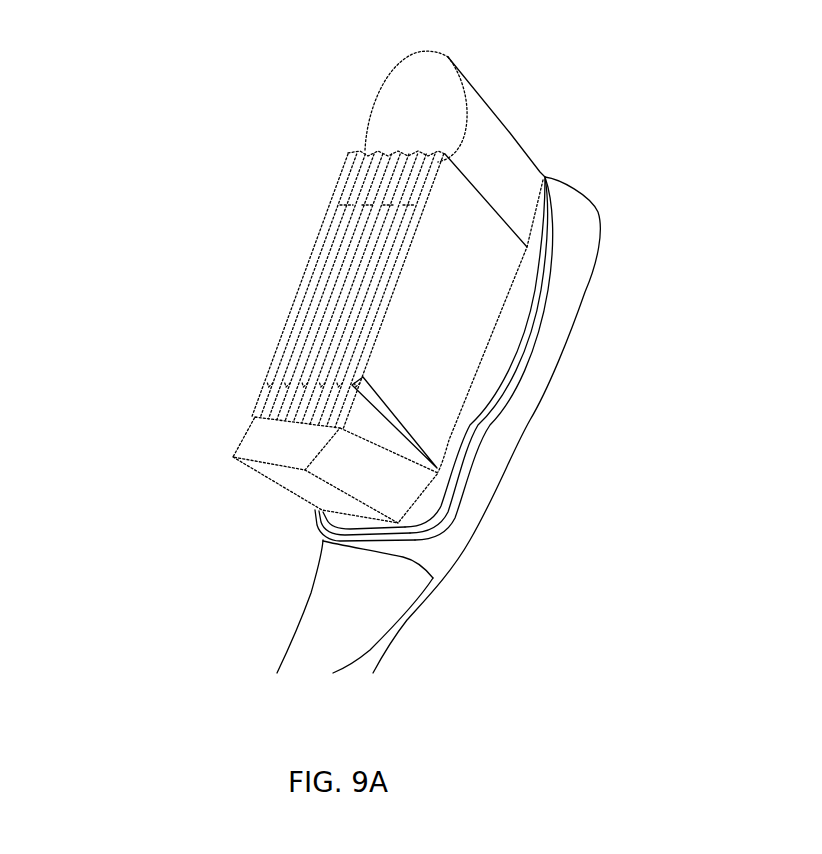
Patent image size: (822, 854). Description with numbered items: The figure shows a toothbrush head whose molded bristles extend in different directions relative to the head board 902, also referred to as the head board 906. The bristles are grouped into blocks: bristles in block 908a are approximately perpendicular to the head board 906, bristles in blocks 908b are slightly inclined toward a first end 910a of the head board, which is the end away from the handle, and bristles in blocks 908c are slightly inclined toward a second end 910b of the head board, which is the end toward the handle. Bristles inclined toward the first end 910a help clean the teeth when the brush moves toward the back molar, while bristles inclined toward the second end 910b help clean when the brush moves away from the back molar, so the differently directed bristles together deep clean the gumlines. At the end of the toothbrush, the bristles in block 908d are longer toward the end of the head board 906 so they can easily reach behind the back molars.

The head board 902 is at (318, 645).
The head board 906 is at (516, 413).
The bristle block 908a is at (373, 473).
The bristle block 908b is at (458, 338).
The bristle block 908c is at (350, 412).
The bristle block 908d is at (437, 113).
The first end of the head board 910a is at (575, 195).
The second end of the head board 910b is at (323, 533).